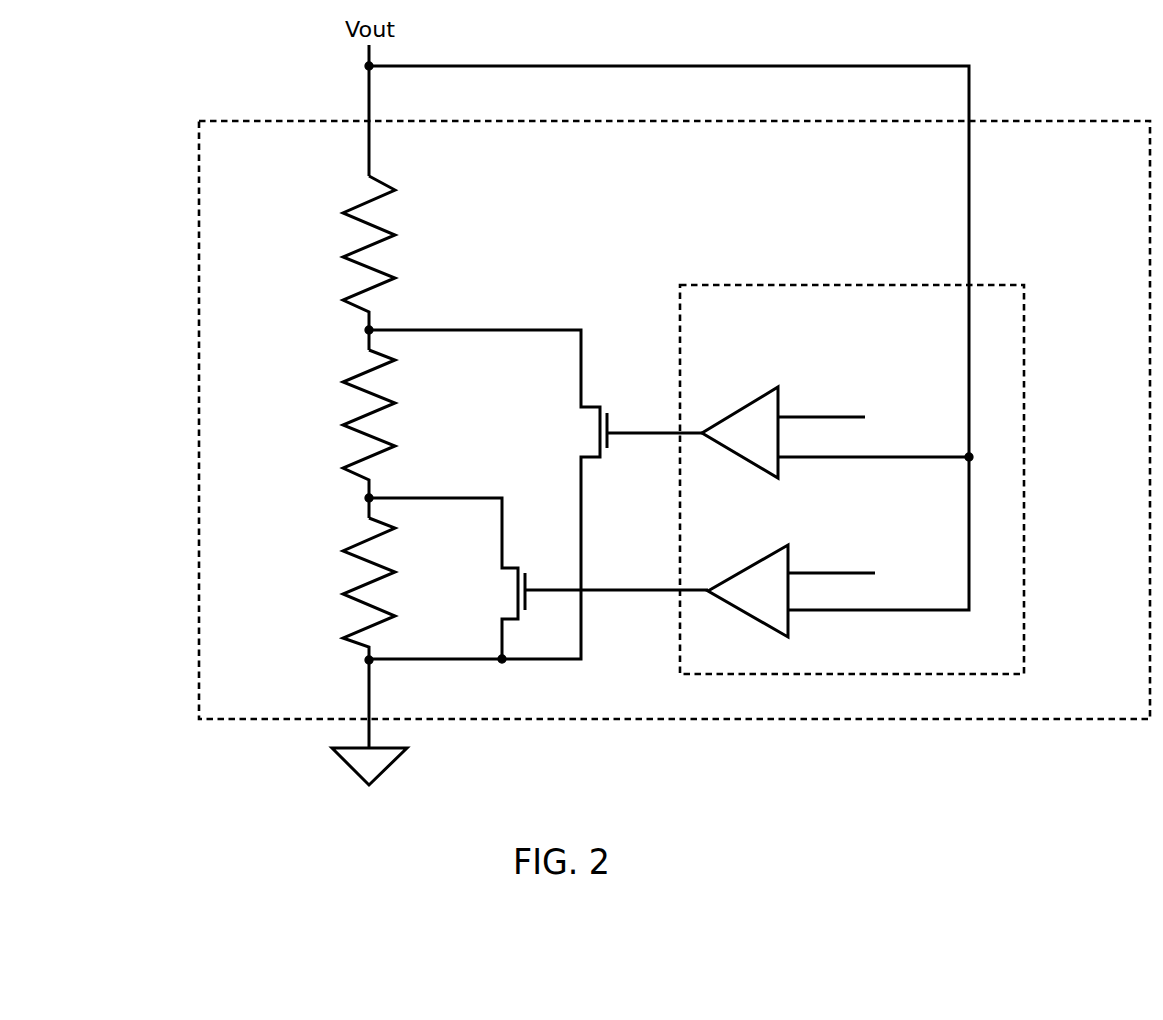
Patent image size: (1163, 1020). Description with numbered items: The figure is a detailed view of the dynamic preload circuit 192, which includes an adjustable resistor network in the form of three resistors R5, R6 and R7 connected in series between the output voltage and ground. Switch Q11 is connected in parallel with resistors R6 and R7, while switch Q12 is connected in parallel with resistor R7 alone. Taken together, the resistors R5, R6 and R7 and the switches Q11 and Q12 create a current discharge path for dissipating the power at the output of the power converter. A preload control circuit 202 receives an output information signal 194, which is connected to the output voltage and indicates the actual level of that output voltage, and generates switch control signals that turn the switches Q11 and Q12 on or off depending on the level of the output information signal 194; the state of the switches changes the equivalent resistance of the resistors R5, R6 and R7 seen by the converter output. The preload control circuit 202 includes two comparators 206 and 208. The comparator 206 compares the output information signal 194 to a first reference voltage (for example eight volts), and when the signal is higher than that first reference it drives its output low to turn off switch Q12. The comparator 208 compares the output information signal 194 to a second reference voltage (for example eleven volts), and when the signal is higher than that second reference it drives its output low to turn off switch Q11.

The dynamic preload circuit 192 is at (674, 444).
The output information signal 194 is at (694, 336).
The preload control circuit 202 is at (852, 479).
The comparator 206 is at (821, 582).
The comparator 208 is at (813, 422).
The resistor R5 is at (342, 263).
The resistor R6 is at (342, 434).
The resistor R7 is at (342, 633).
The switch Q11 is at (535, 494).
The switch Q12 is at (538, 580).